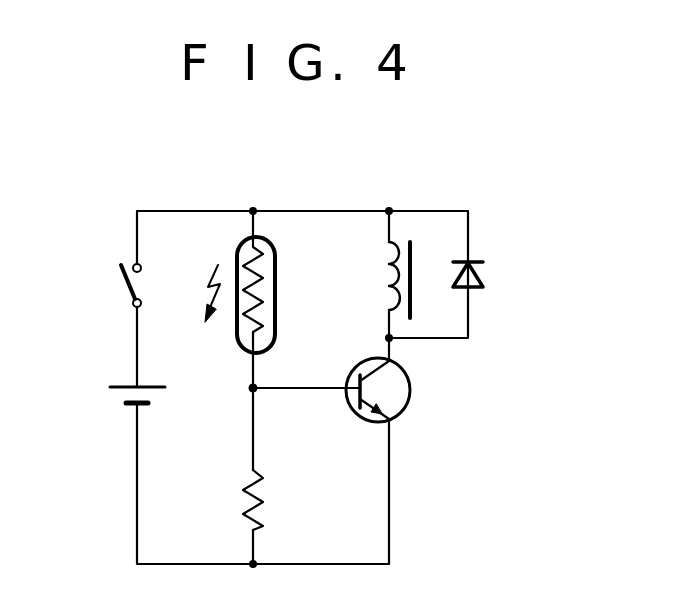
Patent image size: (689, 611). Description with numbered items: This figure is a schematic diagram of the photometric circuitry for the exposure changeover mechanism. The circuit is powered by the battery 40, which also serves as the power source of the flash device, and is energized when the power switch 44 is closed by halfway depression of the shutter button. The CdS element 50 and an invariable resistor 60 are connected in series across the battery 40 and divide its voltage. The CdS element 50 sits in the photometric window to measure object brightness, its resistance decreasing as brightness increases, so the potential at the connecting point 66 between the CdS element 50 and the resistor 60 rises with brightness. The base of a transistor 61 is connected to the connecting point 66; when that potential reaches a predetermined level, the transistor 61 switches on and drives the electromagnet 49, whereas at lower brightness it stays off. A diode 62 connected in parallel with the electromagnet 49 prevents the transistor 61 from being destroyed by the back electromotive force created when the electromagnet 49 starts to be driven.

The battery 40 is at (128, 386).
The power switch 44 is at (126, 286).
The electromagnet 49 is at (412, 265).
The CdS element 50 is at (276, 288).
The resistor 60 is at (258, 527).
The transistor 61 is at (413, 387).
The diode 62 is at (486, 266).
The connecting point 66 is at (253, 389).